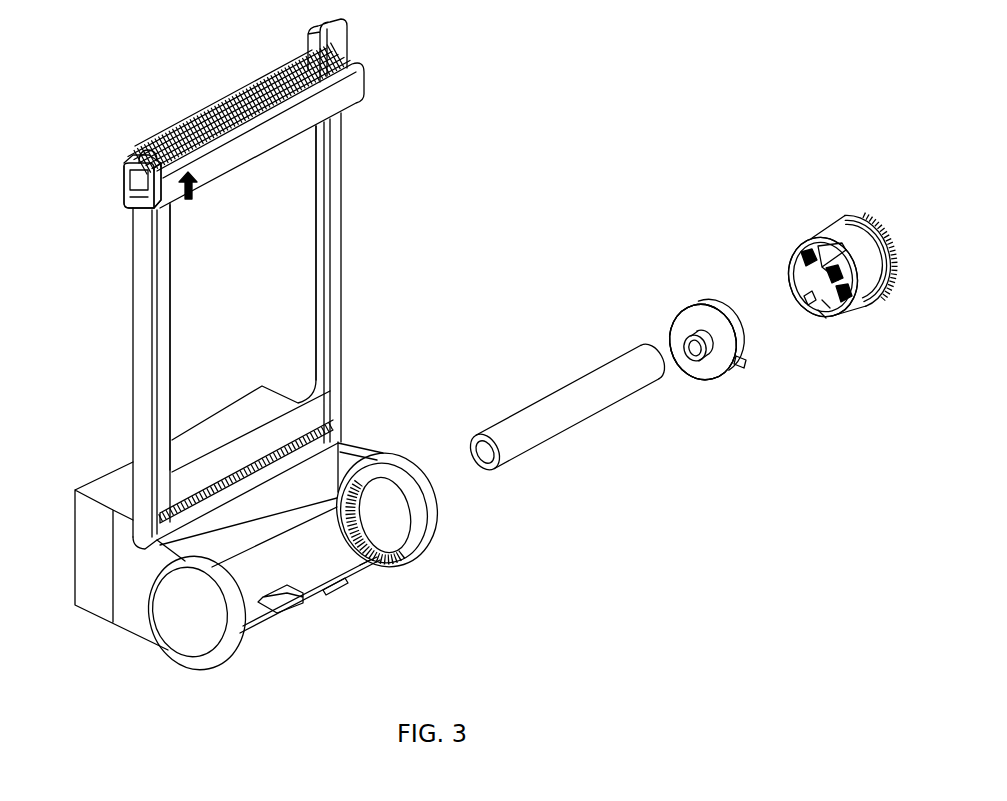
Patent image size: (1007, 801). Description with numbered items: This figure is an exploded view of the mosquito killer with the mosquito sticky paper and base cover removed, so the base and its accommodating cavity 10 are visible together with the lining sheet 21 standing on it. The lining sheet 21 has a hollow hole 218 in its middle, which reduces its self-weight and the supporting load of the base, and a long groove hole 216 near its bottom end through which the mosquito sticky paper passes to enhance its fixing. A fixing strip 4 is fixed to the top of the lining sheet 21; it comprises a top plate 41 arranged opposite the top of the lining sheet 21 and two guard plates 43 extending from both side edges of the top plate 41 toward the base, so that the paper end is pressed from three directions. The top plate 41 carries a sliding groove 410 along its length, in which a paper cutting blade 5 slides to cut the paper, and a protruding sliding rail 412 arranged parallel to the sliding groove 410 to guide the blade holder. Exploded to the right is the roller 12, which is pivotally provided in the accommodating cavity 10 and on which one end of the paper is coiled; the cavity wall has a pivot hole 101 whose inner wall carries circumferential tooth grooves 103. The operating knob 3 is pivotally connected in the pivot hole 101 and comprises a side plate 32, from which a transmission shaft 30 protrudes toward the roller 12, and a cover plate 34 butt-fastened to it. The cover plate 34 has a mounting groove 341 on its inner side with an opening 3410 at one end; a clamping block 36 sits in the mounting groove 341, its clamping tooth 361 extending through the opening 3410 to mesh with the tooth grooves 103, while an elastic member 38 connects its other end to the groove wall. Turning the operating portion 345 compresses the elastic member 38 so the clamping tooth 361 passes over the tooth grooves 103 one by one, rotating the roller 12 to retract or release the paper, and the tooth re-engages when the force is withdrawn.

The operating knob 3 is at (724, 163).
The fixing strip 4 is at (43, 148).
The paper cutting blade 5 is at (335, 40).
The accommodating cavity 10 is at (307, 575).
The roller 12 is at (570, 418).
The lining sheet 21 is at (335, 173).
The transmission shaft 30 is at (690, 350).
The side plate 32 is at (703, 298).
The cover plate 34 is at (815, 224).
The clamping block 36 is at (824, 302).
The elastic member 38 is at (822, 274).
The top plate 41 is at (122, 173).
The guard plate 43 is at (128, 178).
The pivot hole 101 is at (385, 508).
The tooth grooves 103 is at (393, 568).
The long groove hole 216 is at (343, 408).
The hollow hole 218 is at (262, 268).
The mounting groove 341 is at (800, 256).
The operating portion 345 is at (880, 232).
The clamping tooth 361 is at (822, 313).
The sliding groove 410 is at (175, 130).
The sliding rail 412 is at (134, 158).
The opening 3410 is at (806, 297).